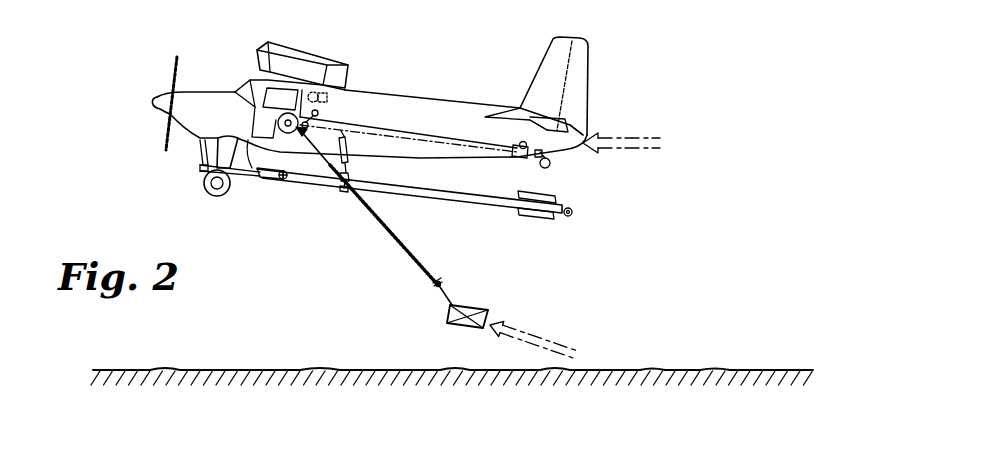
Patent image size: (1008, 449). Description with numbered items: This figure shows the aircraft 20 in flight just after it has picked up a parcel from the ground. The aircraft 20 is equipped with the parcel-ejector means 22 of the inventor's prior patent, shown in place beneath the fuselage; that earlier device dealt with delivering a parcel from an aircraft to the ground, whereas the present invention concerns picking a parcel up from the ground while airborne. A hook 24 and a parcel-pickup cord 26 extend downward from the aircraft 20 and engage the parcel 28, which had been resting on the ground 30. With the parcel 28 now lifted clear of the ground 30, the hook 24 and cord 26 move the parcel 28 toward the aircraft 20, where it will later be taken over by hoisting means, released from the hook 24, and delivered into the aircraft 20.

The aircraft 20 is at (417, 110).
The parcel-ejector means 22 is at (497, 208).
The hook 24 is at (443, 285).
The parcel-pickup cord 26 is at (413, 258).
The parcel 28 is at (479, 304).
The ground 30 is at (640, 368).